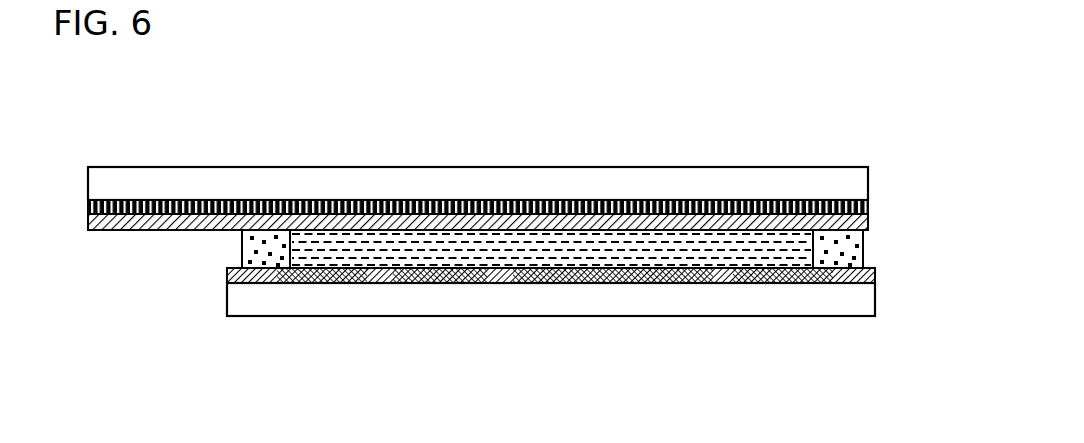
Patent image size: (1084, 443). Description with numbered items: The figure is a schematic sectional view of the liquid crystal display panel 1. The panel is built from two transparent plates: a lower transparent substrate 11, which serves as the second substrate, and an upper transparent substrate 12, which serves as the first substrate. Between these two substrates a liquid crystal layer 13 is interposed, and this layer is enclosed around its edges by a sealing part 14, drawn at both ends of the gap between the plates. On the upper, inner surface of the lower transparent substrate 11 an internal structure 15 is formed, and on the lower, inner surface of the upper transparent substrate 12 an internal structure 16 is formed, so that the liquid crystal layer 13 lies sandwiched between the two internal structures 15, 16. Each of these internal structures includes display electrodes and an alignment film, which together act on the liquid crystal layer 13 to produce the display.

The liquid crystal display panel 1 is at (272, 133).
The lower transparent substrate 11 is at (554, 295).
The upper transparent substrate 12 is at (605, 177).
The liquid crystal layer 13 is at (493, 235).
The sealing part 14 is at (242, 247).
The internal structure 15 is at (682, 282).
The internal structure 16 is at (715, 198).